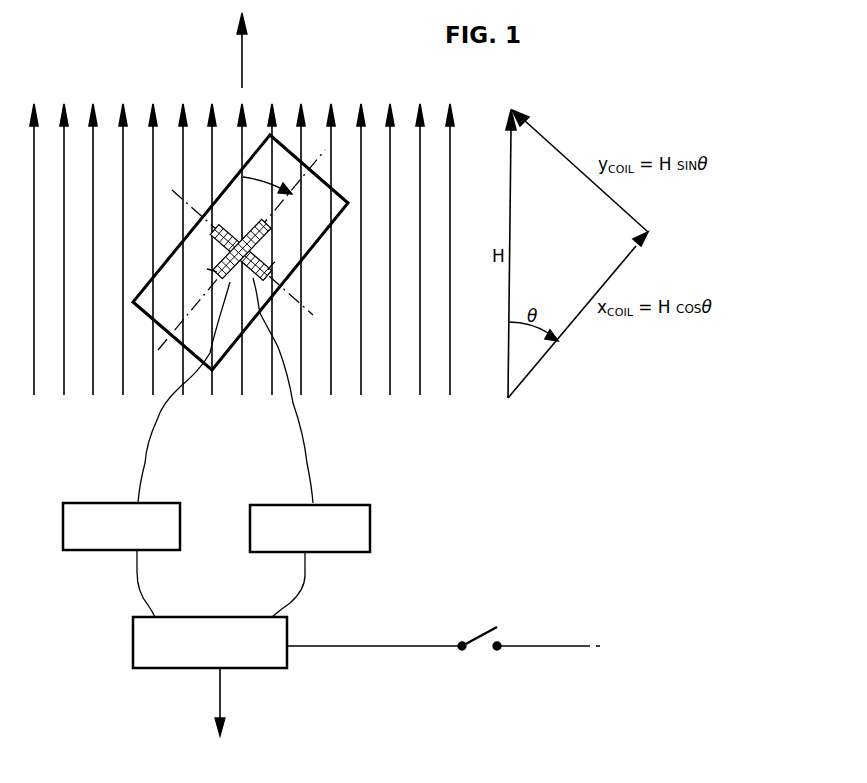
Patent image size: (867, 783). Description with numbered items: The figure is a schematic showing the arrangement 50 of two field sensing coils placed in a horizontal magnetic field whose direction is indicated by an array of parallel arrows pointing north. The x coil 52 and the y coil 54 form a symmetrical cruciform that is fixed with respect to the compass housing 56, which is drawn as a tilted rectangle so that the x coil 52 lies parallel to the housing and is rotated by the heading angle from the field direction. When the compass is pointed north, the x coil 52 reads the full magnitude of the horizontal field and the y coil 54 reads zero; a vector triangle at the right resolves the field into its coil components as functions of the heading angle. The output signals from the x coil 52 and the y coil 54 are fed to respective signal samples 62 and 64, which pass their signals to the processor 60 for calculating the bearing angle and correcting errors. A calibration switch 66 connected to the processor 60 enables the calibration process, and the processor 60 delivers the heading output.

The arrangement 50 is at (528, 510).
The x coil 52 is at (265, 232).
The y coil 54 is at (223, 228).
The compass housing 56 is at (280, 138).
The processor 60 is at (288, 631).
The signal sample 62 is at (115, 503).
The signal sampler 64 is at (333, 505).
The calibration switch 66 is at (514, 625).